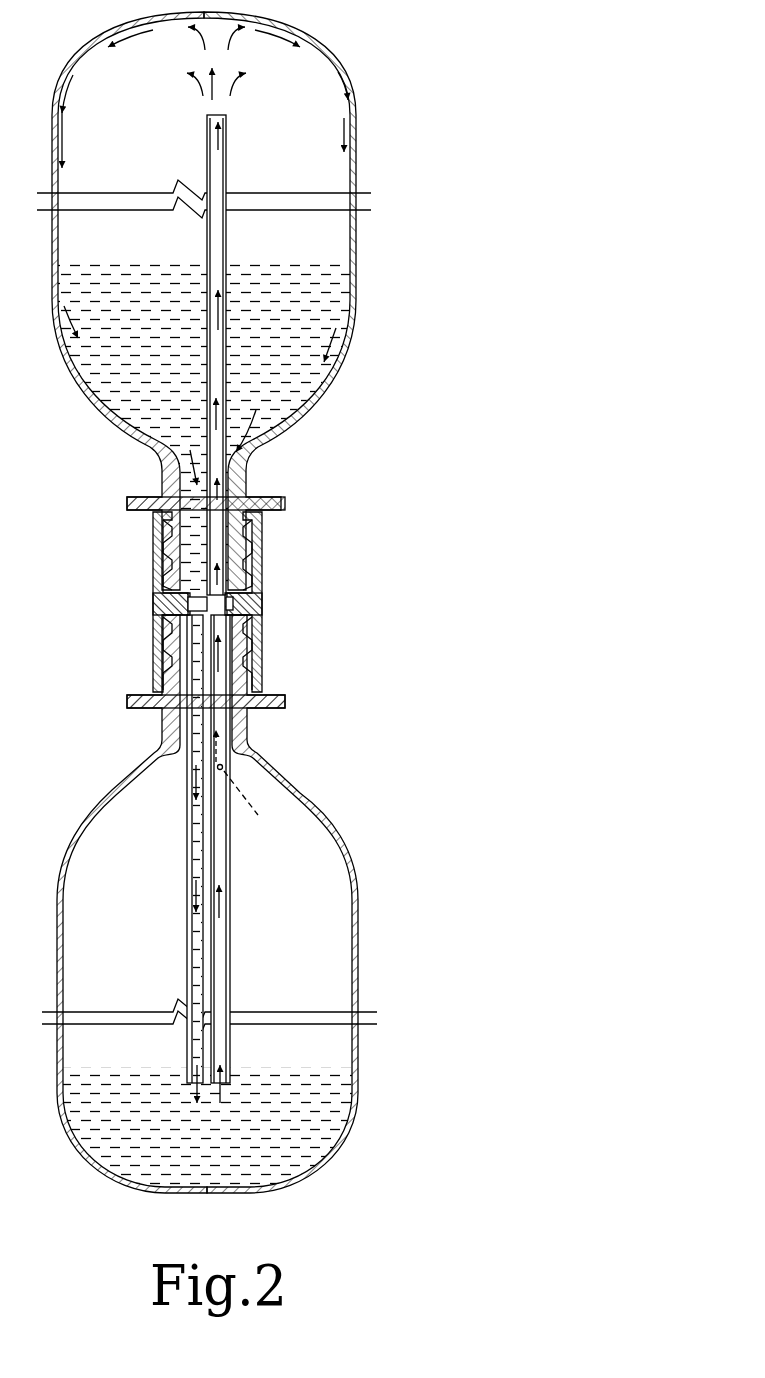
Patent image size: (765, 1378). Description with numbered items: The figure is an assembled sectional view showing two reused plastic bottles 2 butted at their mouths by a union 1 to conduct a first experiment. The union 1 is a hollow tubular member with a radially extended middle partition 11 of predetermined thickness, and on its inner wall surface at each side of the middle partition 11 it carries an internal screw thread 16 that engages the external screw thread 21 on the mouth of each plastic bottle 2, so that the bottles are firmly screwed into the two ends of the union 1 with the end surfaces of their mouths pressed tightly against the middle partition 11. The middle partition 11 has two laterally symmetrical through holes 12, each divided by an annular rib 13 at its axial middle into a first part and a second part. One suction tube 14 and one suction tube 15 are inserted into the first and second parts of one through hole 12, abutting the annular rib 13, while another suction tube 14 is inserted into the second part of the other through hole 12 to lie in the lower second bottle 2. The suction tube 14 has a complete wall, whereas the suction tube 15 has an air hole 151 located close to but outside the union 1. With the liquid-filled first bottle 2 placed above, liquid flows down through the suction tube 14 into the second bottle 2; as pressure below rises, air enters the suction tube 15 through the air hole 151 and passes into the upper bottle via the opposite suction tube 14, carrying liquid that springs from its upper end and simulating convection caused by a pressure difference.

The union 1 is at (270, 599).
The plastic bottle 2 is at (338, 372).
The middle partition 11 is at (190, 598).
The through hole 12 is at (190, 595).
The annular rib 13 is at (223, 596).
The suction tube 14 is at (226, 245).
The suction tube 15 is at (230, 882).
The air hole 151 is at (222, 767).
The internal screw thread 16 is at (262, 633).
The external screw thread 21 is at (252, 530).